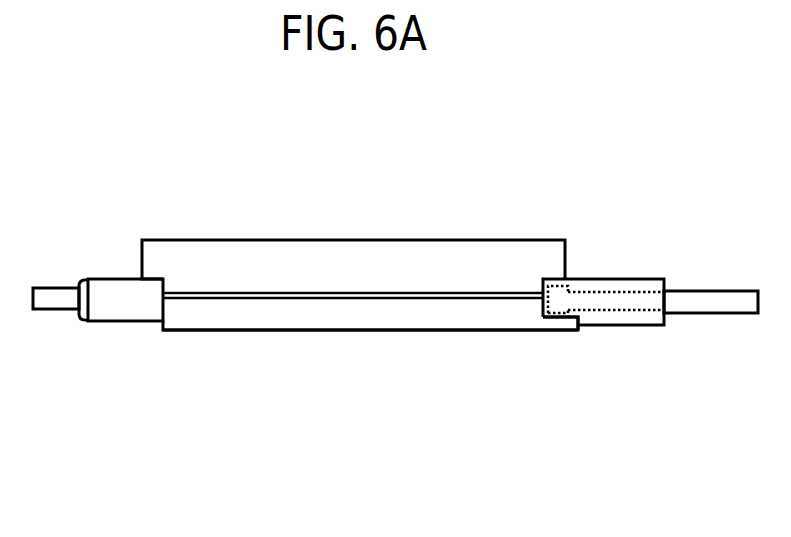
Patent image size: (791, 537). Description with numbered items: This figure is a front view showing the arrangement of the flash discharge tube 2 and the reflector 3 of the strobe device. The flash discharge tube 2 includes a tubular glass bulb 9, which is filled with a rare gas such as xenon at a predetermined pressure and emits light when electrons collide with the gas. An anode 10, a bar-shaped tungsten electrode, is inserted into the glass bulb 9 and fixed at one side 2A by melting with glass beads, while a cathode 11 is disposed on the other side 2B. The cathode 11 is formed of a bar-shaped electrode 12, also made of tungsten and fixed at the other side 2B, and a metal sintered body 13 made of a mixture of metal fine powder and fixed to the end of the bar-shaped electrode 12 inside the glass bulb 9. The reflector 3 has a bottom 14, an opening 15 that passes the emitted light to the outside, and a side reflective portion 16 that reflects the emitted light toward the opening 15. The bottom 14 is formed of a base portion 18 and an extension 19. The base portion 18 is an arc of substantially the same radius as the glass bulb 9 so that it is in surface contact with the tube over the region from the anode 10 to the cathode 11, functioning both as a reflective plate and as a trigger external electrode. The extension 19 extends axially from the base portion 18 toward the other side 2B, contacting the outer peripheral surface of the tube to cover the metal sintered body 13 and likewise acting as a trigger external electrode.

The flash discharge tube 2 is at (745, 150).
The one side 2A is at (108, 279).
The other side 2B is at (652, 279).
The reflector 3 is at (510, 463).
The tubular glass bulb 9 is at (155, 279).
The anode 10 is at (53, 288).
The cathode 11 is at (683, 197).
The bar-shaped electrode 12 is at (638, 292).
The metal sintered body 13 is at (565, 287).
The bottom 14 is at (600, 410).
The opening 15 is at (308, 240).
The side reflective portion 16 is at (336, 270).
The base portion 18 is at (378, 318).
The extension 19 is at (563, 332).